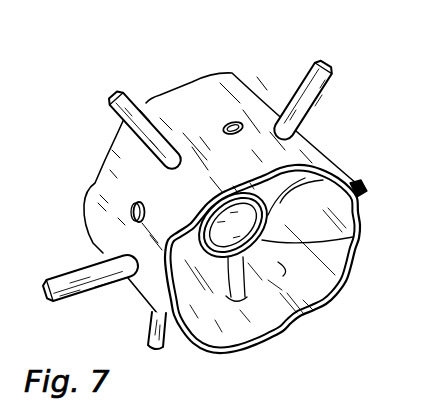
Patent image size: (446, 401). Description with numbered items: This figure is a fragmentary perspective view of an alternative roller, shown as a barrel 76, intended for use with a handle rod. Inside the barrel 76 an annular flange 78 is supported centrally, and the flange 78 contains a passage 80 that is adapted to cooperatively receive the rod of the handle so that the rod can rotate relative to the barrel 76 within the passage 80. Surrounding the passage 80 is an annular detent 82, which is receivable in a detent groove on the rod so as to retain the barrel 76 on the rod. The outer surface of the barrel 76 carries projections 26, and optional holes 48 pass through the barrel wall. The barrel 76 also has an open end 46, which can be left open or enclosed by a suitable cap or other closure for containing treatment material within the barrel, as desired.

The projections 26 is at (133, 90).
The open end 46 is at (333, 301).
The holes 48 is at (233, 122).
The barrel 76 is at (360, 258).
The annular flange 78 is at (283, 213).
The passage 80 is at (355, 236).
The annular detent 82 is at (233, 238).